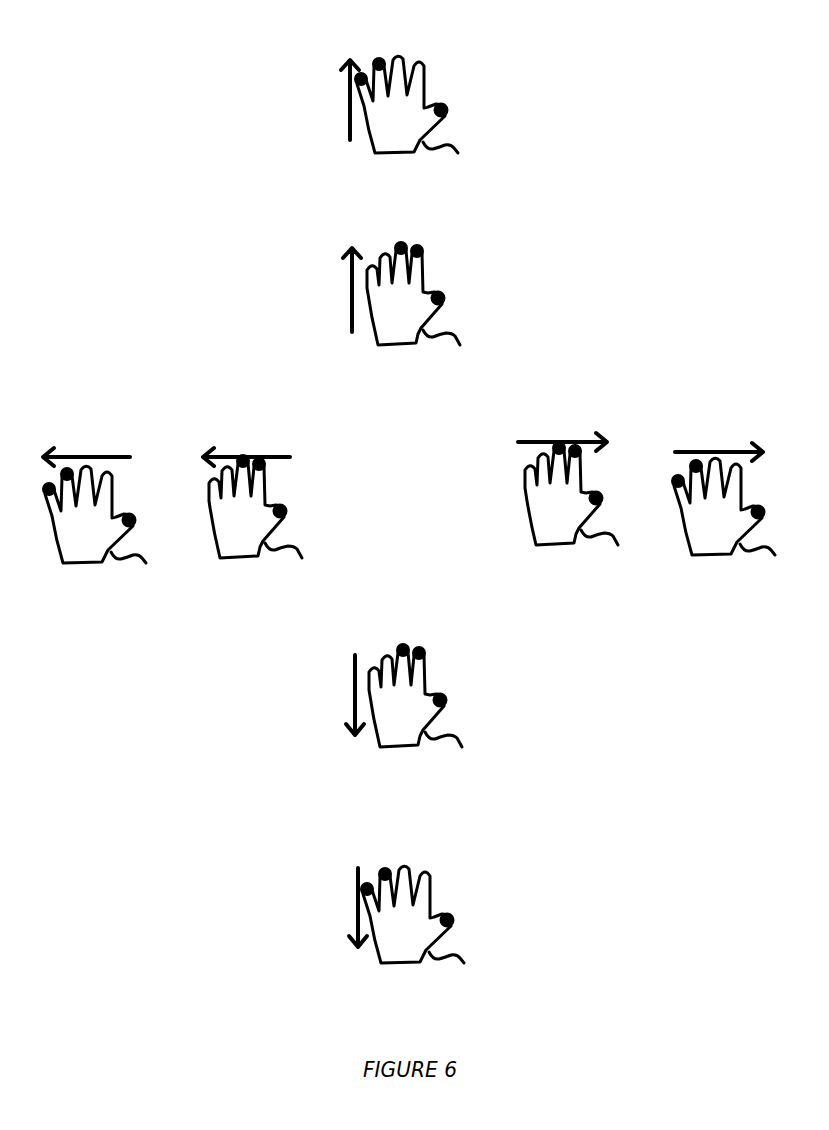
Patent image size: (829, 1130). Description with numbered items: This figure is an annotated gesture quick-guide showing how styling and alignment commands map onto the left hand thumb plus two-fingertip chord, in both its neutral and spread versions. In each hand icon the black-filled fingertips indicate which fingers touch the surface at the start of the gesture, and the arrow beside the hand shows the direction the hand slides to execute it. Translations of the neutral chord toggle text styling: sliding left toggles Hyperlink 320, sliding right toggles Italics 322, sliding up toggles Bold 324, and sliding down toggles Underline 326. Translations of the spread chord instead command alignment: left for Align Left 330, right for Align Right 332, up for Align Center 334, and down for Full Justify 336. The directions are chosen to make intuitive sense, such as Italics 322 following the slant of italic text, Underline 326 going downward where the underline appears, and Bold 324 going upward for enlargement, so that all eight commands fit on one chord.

The Align Center 334 is at (399, 98).
The Bold 324 is at (401, 289).
The Align Left 330 is at (94, 494).
The Hyperlink 320 is at (252, 495).
The Italics 322 is at (568, 491).
The Align Right 332 is at (724, 488).
The Underline 326 is at (404, 694).
The Full Justify 336 is at (406, 896).